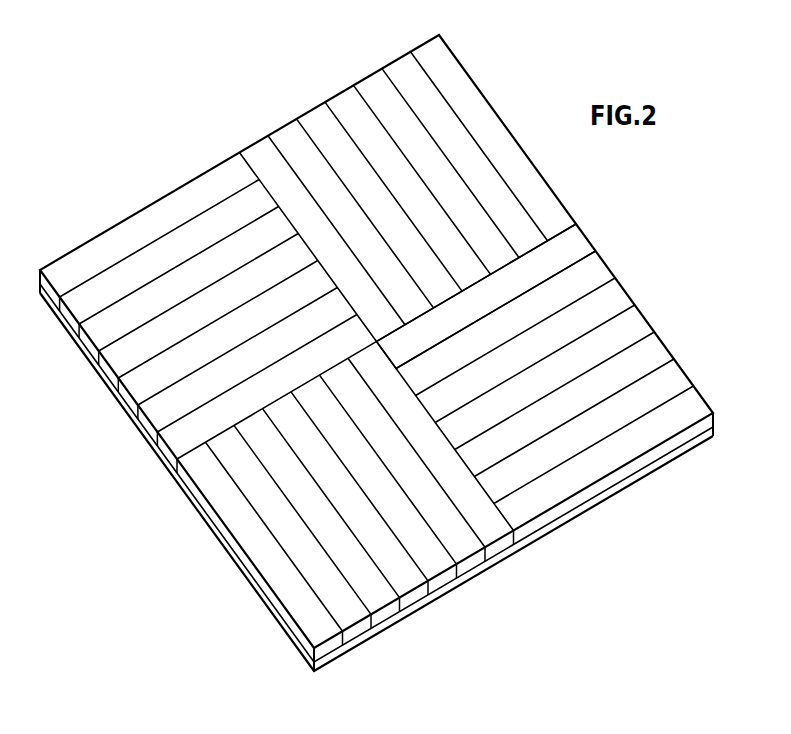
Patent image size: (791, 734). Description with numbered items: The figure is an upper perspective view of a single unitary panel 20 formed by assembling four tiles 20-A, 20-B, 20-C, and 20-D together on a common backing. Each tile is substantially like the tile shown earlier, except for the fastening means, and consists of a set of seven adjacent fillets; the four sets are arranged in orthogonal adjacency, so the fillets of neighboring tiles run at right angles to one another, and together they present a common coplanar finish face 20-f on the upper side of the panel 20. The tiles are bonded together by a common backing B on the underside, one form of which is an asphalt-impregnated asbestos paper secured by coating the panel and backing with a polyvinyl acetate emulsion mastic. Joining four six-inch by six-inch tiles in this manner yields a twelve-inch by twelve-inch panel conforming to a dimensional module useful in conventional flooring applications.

The panel 20 is at (439, 612).
The tile 20-A is at (118, 237).
The tile 20-B is at (465, 92).
The tile 20-C is at (664, 363).
The tile 20-D is at (264, 573).
The finish face 20-f is at (562, 225).
The common backing B is at (570, 518).